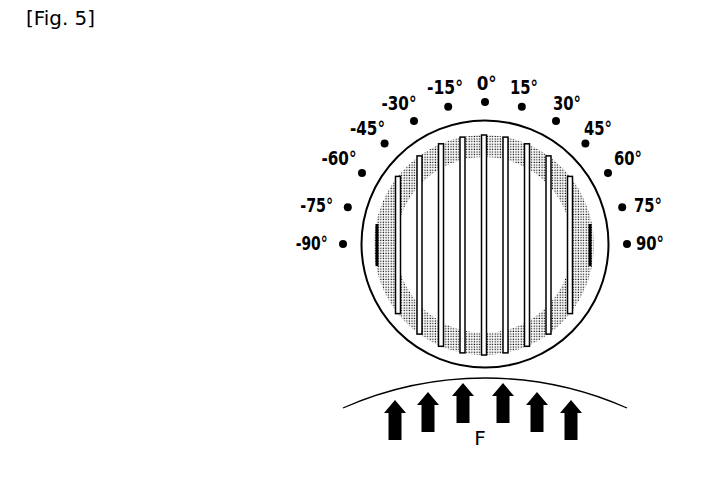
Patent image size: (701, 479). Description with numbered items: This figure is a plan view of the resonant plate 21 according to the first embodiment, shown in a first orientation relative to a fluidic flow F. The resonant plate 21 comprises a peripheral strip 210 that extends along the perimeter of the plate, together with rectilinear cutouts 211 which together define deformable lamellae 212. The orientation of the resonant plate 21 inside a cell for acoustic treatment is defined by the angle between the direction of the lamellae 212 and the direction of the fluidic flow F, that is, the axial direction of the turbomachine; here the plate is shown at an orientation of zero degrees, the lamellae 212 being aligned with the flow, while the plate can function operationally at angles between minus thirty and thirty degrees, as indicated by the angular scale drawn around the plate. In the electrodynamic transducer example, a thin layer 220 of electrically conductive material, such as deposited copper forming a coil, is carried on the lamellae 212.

The resonant plate 21 is at (481, 244).
The peripheral strip 210 is at (597, 283).
The rectilinear cutouts 211 is at (395, 300).
The deformable lamellae 212 is at (404, 253).
The thin layer of electrically conductive material 220 is at (533, 328).